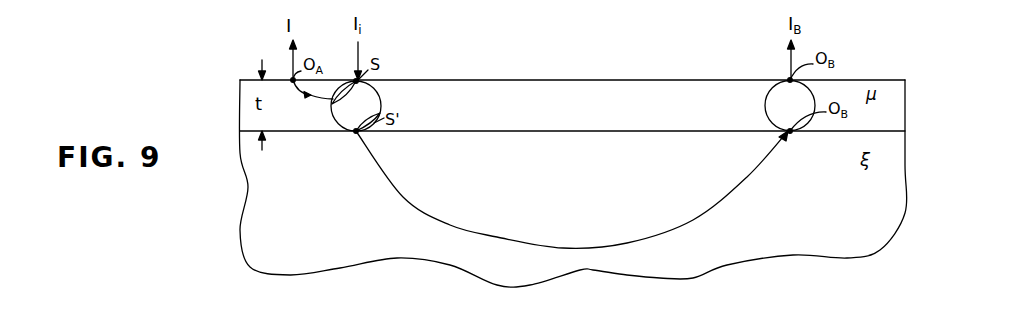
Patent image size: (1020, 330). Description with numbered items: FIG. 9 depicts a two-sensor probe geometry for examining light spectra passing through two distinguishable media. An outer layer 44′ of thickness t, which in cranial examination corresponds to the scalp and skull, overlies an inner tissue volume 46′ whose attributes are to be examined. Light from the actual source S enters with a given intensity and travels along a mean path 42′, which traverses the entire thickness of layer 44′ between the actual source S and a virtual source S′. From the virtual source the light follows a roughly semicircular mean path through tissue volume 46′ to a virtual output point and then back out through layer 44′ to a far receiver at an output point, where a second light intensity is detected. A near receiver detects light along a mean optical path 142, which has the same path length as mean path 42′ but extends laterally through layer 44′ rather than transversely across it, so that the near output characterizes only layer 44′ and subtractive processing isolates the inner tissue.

The layer 44′ is at (578, 111).
The tissue volume 46′ is at (588, 179).
The mean path 42′ is at (336, 118).
The mean optical path 142 is at (300, 92).